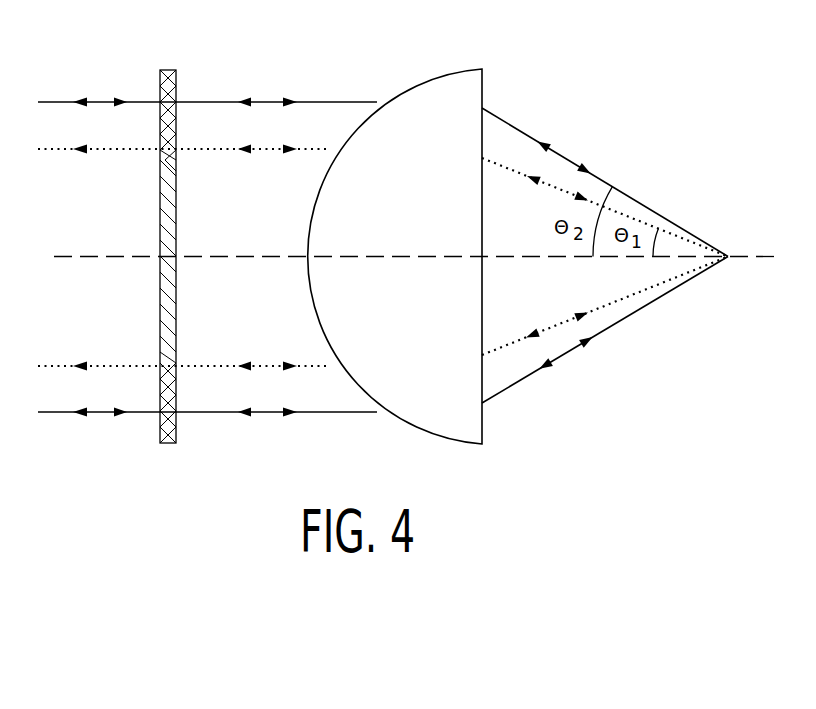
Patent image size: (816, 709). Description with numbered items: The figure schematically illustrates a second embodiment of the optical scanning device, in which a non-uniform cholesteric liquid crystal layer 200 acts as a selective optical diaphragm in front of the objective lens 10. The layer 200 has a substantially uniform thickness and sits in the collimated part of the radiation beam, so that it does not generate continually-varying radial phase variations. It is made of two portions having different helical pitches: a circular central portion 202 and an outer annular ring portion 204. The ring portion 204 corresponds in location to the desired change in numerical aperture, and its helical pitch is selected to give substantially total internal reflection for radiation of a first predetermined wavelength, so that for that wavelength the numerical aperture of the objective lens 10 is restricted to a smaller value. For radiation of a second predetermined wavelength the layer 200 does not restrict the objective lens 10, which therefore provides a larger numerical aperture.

The objective lens 10 is at (419, 98).
The non-uniform cholesteric liquid crystal layer 200 is at (133, 221).
The circular central portion 202 is at (160, 198).
The outer annular ring portion 204 is at (160, 126).